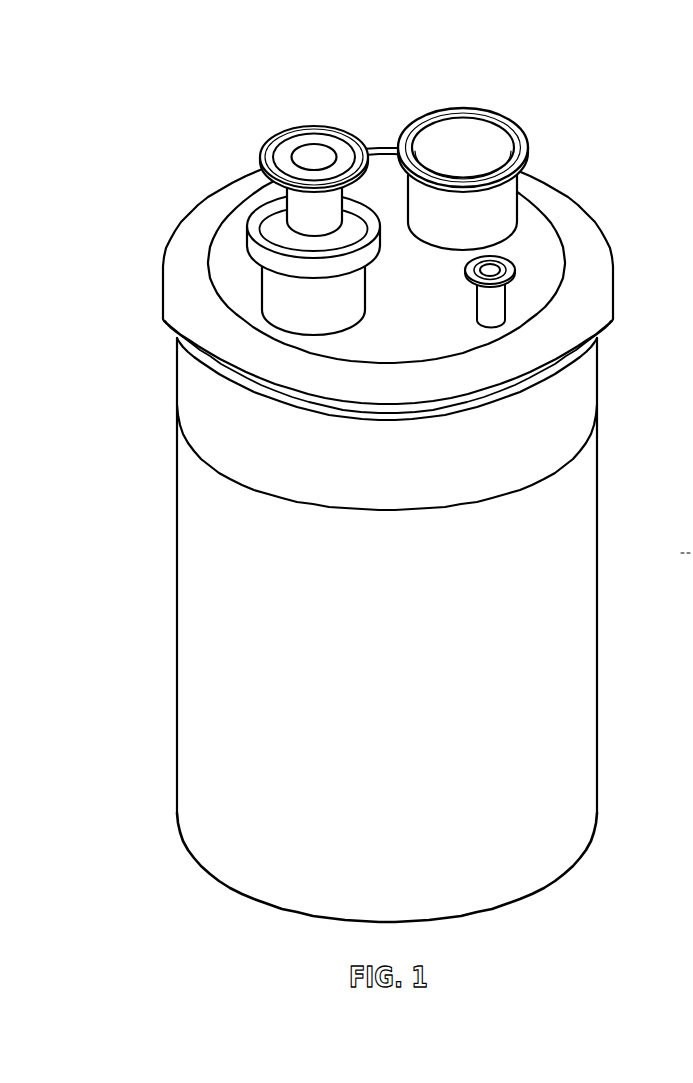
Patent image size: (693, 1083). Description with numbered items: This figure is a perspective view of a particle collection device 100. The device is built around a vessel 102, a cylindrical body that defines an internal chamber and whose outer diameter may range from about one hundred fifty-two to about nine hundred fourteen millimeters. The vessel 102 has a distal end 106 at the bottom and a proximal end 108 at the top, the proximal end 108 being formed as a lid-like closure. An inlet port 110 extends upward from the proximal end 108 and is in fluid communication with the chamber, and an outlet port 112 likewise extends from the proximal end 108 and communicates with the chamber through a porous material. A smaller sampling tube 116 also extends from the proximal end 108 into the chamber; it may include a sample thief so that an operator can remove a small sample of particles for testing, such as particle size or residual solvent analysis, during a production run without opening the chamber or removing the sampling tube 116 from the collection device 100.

The collection device 100 is at (376, 505).
The vessel 102 is at (208, 615).
The distal end 106 is at (233, 890).
The proximal end 108 is at (163, 278).
The inlet port 110 is at (467, 140).
The outlet port 112 is at (260, 157).
The sampling tube 116 is at (517, 272).